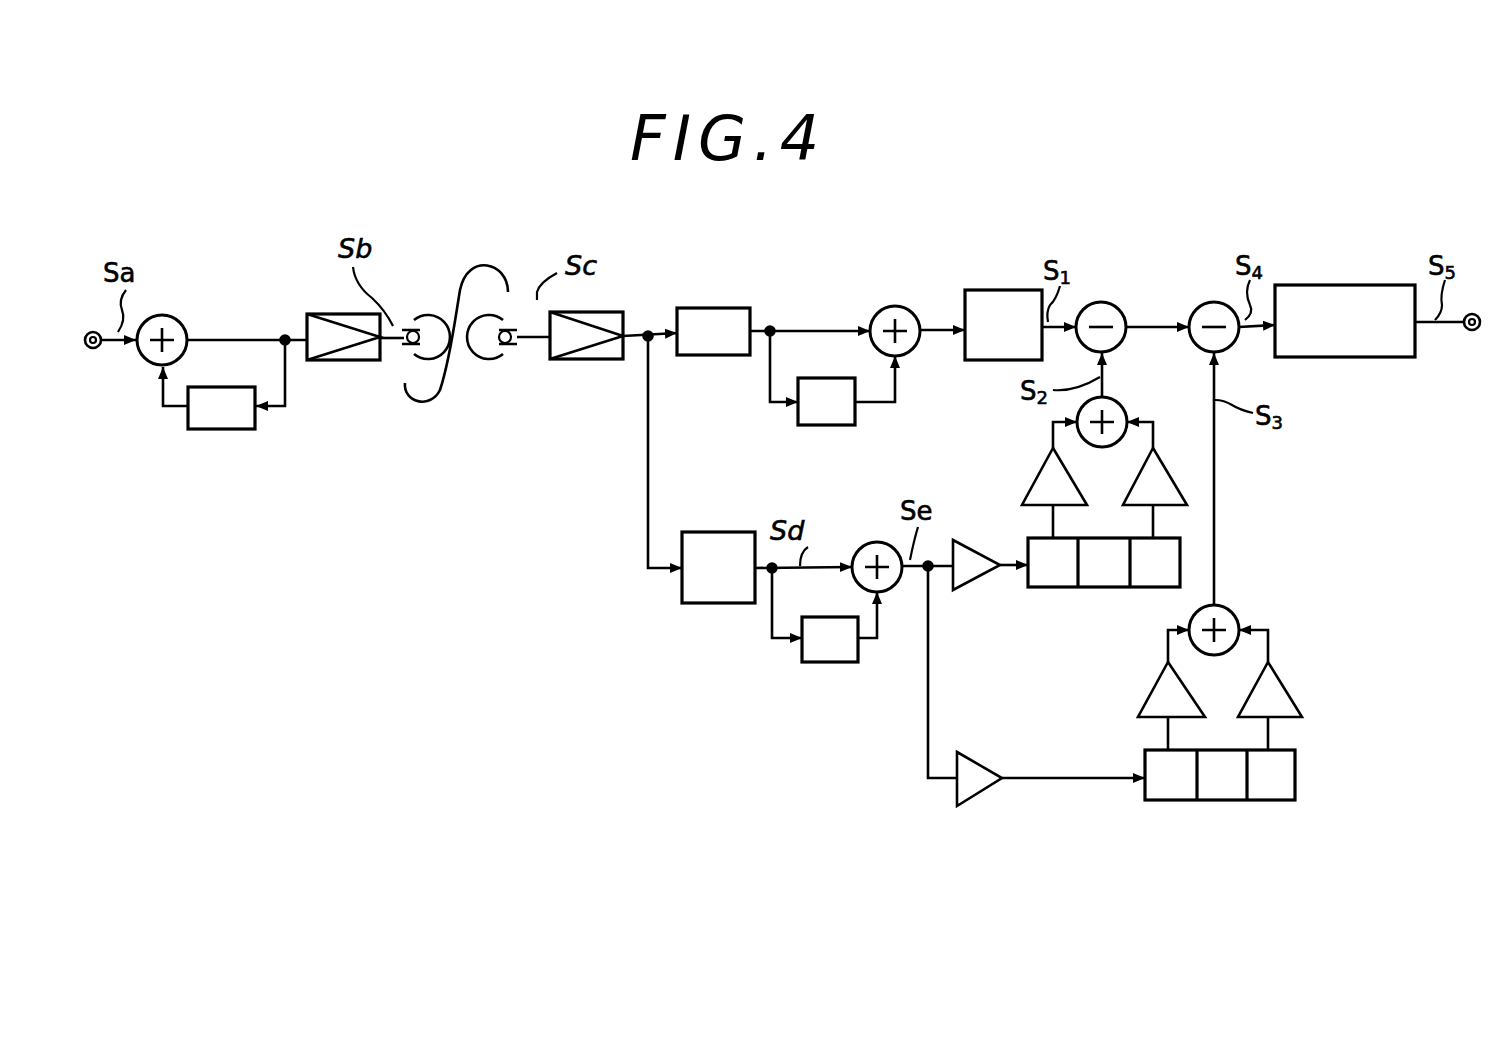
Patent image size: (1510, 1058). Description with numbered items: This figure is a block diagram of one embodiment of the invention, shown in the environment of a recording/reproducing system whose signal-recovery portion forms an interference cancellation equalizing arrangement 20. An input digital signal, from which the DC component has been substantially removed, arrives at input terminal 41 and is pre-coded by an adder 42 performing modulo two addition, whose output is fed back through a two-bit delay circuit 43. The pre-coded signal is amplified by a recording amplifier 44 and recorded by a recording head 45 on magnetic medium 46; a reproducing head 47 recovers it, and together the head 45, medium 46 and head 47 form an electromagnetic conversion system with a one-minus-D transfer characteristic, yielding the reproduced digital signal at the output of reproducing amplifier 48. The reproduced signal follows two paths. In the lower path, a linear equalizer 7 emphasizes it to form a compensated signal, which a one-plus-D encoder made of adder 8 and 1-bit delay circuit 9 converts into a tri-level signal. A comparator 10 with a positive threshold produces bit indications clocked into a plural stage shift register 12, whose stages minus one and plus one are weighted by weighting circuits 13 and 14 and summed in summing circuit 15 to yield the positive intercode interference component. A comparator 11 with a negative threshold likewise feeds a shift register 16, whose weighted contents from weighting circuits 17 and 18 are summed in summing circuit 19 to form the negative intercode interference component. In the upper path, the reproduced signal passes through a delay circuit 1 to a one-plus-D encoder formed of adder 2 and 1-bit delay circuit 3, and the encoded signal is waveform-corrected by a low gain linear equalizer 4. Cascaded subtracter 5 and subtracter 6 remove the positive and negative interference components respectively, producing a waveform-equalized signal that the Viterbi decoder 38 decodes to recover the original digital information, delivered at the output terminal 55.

The delay circuit 1 is at (702, 309).
The adder 2 is at (884, 313).
The 1-bit delay circuit 3 is at (820, 425).
The low gain linear equalizer 4 is at (985, 290).
The subtracter 5 is at (1100, 302).
The subtracter 6 is at (1208, 302).
The linear equalizer 7 is at (712, 604).
The adder 8 is at (872, 547).
The 1-bit delay circuit 9 is at (830, 663).
The comparator 10 is at (975, 582).
The comparator 11 is at (980, 797).
The shift register 12 is at (1066, 588).
The weighting circuit 13 is at (1036, 480).
The weighting circuit 14 is at (1168, 472).
The summing circuit 15 is at (1118, 410).
The shift register 16 is at (1190, 801).
The weighting circuit 17 is at (1156, 686).
The weighting circuit 18 is at (1280, 684).
The summing circuit 19 is at (1232, 616).
The interference cancellation equalizing arrangement 20 is at (1024, 190).
The Viterbi decoder 38 is at (1368, 358).
The input terminal 41 is at (95, 349).
The adder 42 is at (170, 316).
The two-bit delay circuit 43 is at (240, 430).
The recording amplifier 44 is at (358, 360).
The recording head 45 is at (424, 317).
The magnetic medium 46 is at (420, 392).
The reproducing head 47 is at (490, 359).
The reproducing amplifier 48 is at (585, 360).
The output terminal 55 is at (1471, 332).